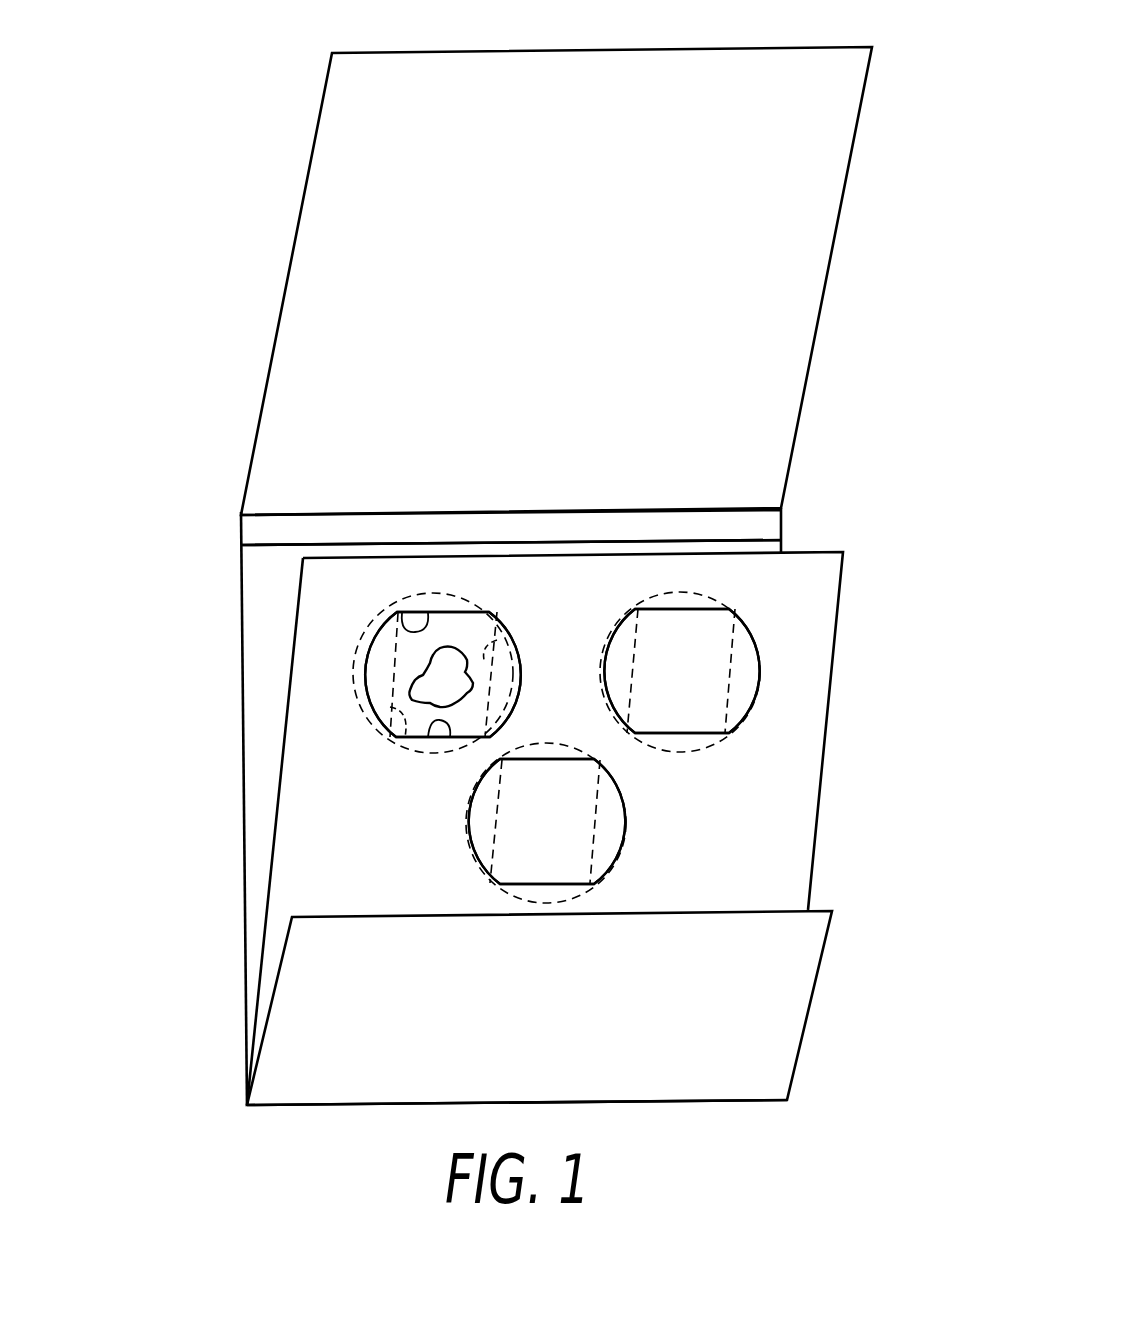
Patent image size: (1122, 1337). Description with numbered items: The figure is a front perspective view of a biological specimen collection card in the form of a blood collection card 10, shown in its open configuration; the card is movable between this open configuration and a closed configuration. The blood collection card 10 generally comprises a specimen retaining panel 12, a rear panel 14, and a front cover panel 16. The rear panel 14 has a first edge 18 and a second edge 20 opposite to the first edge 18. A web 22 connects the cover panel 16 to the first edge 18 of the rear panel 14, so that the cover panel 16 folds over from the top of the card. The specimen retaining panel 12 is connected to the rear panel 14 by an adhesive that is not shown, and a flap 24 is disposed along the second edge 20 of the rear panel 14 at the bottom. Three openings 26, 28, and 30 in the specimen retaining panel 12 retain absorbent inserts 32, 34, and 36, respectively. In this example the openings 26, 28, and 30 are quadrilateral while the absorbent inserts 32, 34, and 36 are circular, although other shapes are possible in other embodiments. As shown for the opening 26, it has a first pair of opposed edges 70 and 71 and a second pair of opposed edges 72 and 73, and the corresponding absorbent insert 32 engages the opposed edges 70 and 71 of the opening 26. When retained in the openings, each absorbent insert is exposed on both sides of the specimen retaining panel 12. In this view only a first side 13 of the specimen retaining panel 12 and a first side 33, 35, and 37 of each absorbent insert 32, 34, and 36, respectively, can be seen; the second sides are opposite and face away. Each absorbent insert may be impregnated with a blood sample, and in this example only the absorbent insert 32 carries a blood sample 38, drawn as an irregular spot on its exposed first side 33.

The blood collection card 10 is at (147, 373).
The specimen retaining panel 12 is at (772, 782).
The first side of the specimen retaining panel 13 is at (332, 830).
The rear panel 14 is at (262, 727).
The front cover panel 16 is at (752, 293).
The first edge 18 is at (273, 550).
The second edge 20 is at (275, 1107).
The web 22 is at (258, 530).
The flap 24 is at (753, 997).
The opening 26 is at (460, 633).
The opening 28 is at (692, 642).
The opening 30 is at (547, 850).
The absorbent insert 32 is at (521, 684).
The first side of absorbent insert 33 is at (378, 682).
The absorbent insert 34 is at (758, 645).
The first side of absorbent insert 35 is at (620, 658).
The absorbent insert 36 is at (625, 815).
The first side of absorbent insert 37 is at (480, 820).
The blood sample 38 is at (437, 677).
The opposed edge 70 is at (407, 623).
The opposed edge 71 is at (432, 738).
The opposed edge 72 is at (485, 641).
The opposed edge 73 is at (400, 743).